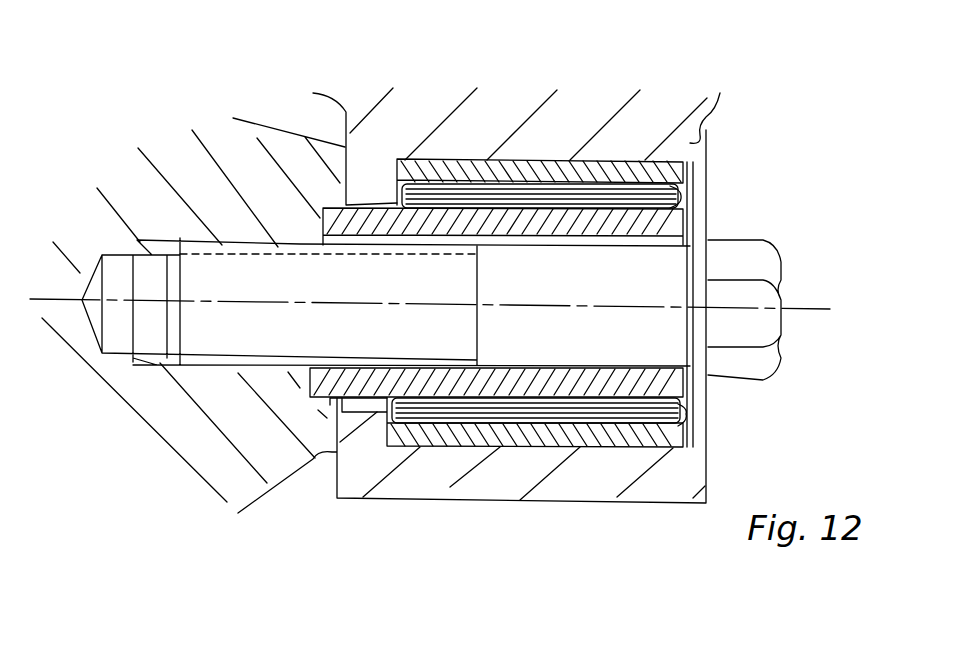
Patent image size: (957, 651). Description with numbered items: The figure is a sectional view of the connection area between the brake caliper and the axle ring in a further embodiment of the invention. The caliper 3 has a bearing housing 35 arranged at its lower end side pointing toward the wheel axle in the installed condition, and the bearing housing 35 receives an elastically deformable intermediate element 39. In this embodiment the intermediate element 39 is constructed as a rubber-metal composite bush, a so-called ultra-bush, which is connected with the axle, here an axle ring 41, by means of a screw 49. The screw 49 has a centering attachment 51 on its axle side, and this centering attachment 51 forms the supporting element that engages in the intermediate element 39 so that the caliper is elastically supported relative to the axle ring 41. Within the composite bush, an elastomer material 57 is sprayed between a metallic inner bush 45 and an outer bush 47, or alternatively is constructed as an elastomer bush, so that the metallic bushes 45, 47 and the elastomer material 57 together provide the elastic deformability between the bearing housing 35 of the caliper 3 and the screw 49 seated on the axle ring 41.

The caliper 3 is at (413, 473).
The bearing housing 35 is at (722, 143).
The elastically deformable intermediate element 39 is at (715, 75).
The axle ring 41 is at (277, 445).
The metallic inner bush 45 is at (763, 382).
The outer bush 47 is at (682, 433).
The screw 49 is at (735, 298).
The centering attachment 51 is at (117, 268).
The elastomer material 57 is at (550, 430).